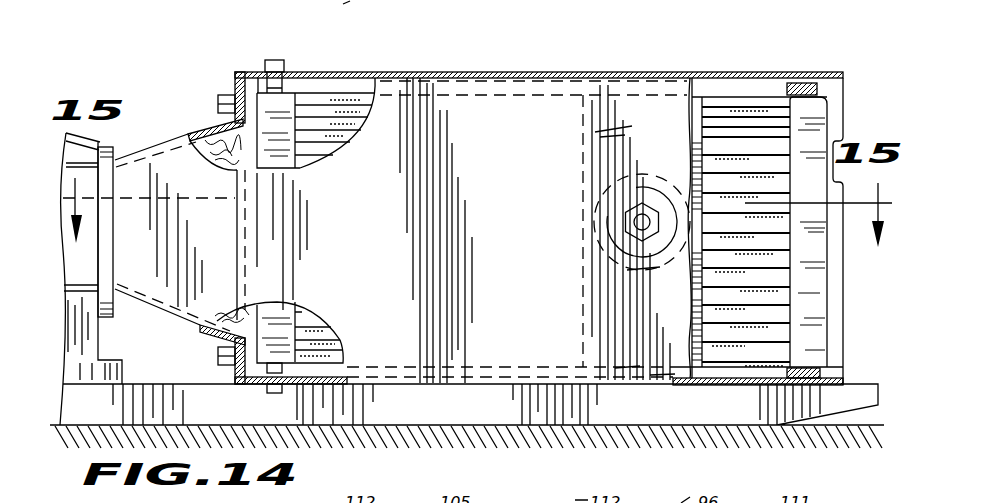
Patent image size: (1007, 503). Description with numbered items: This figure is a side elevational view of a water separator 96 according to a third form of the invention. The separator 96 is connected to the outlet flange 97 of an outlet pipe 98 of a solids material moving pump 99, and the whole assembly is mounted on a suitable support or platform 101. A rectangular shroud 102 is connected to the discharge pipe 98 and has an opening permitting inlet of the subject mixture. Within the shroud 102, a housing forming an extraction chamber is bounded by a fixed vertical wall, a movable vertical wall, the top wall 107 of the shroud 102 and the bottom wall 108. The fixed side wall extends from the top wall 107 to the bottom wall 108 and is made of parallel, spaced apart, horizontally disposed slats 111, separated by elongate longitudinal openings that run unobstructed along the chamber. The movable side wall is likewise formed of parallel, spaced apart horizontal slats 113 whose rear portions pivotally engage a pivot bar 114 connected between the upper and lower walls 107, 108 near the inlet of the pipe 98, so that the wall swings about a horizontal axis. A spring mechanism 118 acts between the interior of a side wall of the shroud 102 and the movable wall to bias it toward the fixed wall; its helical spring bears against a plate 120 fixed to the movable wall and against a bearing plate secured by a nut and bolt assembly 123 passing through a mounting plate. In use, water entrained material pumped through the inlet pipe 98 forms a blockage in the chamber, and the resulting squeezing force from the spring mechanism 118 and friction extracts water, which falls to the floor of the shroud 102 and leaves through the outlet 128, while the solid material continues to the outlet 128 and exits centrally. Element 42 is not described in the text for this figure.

The apparatus 42 is at (452, 2).
The water separator 96 is at (753, 64).
The outlet flange 97 is at (229, 90).
The outlet pipe 98 is at (163, 157).
The solids material moving pump 99 is at (82, 334).
The support or platform 101 is at (527, 415).
The rectangular shroud 102 is at (343, 68).
The top wall 107 is at (722, 73).
The bottom wall 108 is at (739, 386).
The slats 111 is at (797, 342).
The slats 113 is at (325, 362).
The pivot bar 114 is at (273, 58).
The spring mechanism 118 is at (610, 277).
The plate 120 is at (632, 129).
The nut and bolt assembly 123 is at (623, 217).
The outlet 128 is at (837, 103).